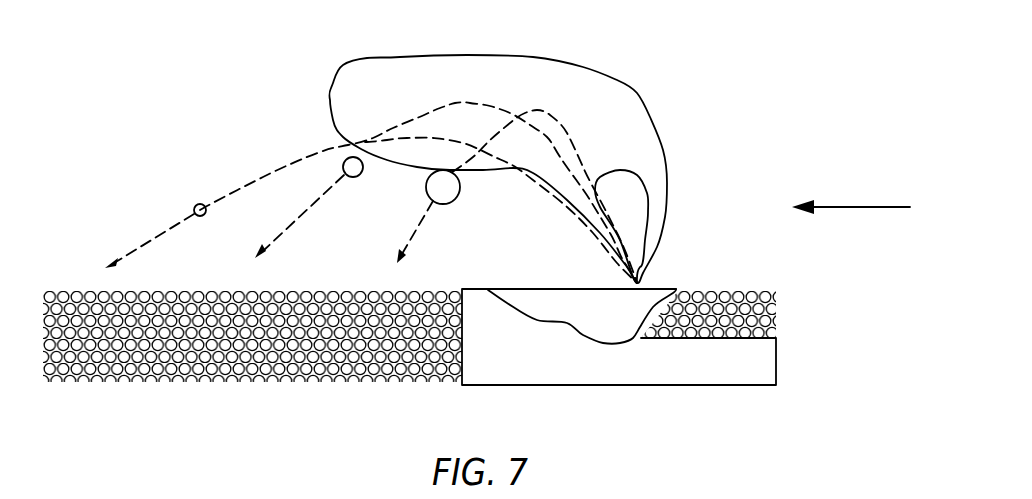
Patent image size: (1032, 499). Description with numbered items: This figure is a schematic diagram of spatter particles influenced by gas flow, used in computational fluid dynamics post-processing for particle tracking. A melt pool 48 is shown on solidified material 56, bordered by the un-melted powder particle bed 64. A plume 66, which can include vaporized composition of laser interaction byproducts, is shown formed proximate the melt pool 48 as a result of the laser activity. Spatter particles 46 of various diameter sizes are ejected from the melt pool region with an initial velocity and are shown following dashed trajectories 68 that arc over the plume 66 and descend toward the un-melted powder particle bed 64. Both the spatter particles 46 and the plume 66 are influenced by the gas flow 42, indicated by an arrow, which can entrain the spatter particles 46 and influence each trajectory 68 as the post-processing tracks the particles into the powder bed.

The gas flow 42 is at (860, 207).
The spatter particle 46 is at (196, 205).
The melt pool 48 is at (615, 347).
The solidified material 56 is at (776, 372).
The un-melted powder particle bed 64 is at (80, 380).
The plume 66 is at (628, 82).
The trajectory 68 is at (452, 100).